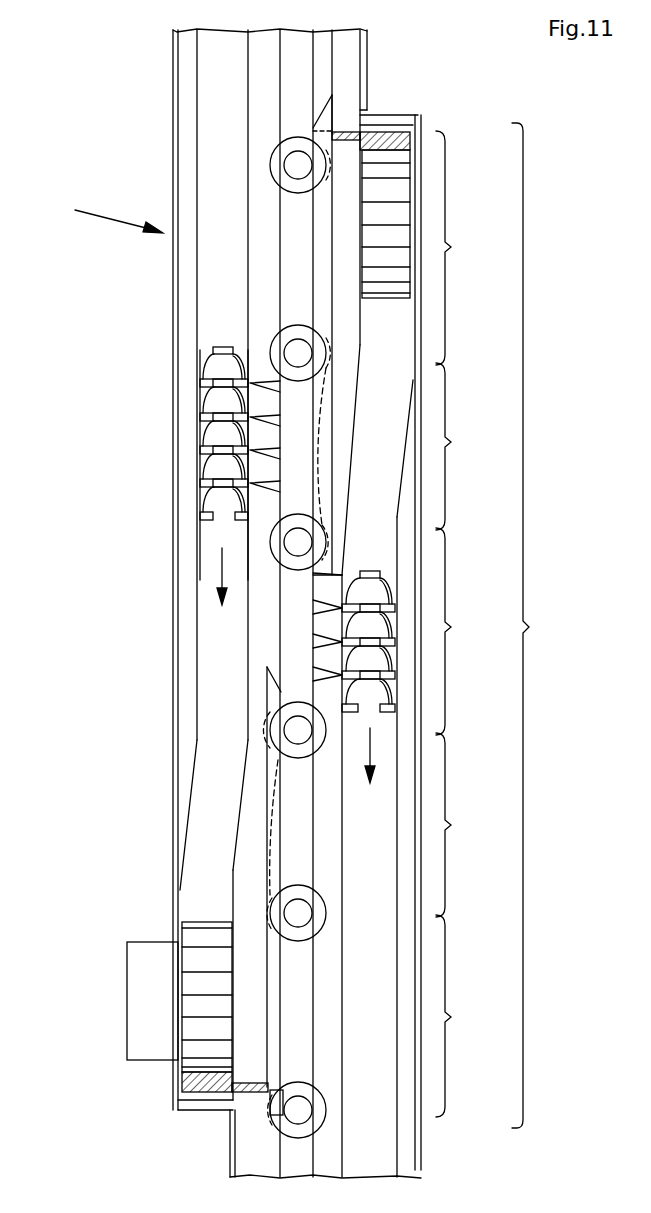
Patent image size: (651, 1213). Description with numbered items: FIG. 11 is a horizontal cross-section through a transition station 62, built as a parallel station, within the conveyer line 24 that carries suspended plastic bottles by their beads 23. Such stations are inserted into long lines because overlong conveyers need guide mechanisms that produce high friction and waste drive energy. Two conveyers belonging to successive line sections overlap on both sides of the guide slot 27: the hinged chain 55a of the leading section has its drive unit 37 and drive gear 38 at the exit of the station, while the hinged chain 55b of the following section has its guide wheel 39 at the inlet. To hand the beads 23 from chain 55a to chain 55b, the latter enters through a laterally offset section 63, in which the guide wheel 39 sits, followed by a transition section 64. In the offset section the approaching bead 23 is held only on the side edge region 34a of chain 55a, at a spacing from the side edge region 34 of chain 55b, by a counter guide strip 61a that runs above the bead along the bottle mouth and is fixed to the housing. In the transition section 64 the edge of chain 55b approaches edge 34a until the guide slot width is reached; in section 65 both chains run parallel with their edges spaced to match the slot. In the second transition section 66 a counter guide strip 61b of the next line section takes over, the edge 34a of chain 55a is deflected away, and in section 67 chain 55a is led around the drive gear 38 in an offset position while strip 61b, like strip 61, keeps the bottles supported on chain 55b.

The bead 23 is at (272, 158).
The conveyer line 24 is at (104, 215).
The guide slot 27 is at (296, 457).
The side edge region 34 is at (333, 478).
The side edge region of hinged chain 55a 34a is at (265, 50).
The drive unit 37 is at (135, 957).
The drive gear 38 is at (203, 945).
The guide wheel 39 is at (392, 272).
The hinged chain 55a is at (222, 400).
The hinged chain 55b is at (390, 690).
The counter guide strip 61 is at (333, 70).
The counter guide strip 61a is at (322, 273).
The counter guide strip 61b is at (270, 765).
The transition station 62 is at (537, 625).
The laterally offset section 63 is at (459, 248).
The transition section 64 is at (459, 446).
The parallel section 65 is at (459, 631).
The second transition section 66 is at (459, 825).
The section 67 is at (459, 1016).